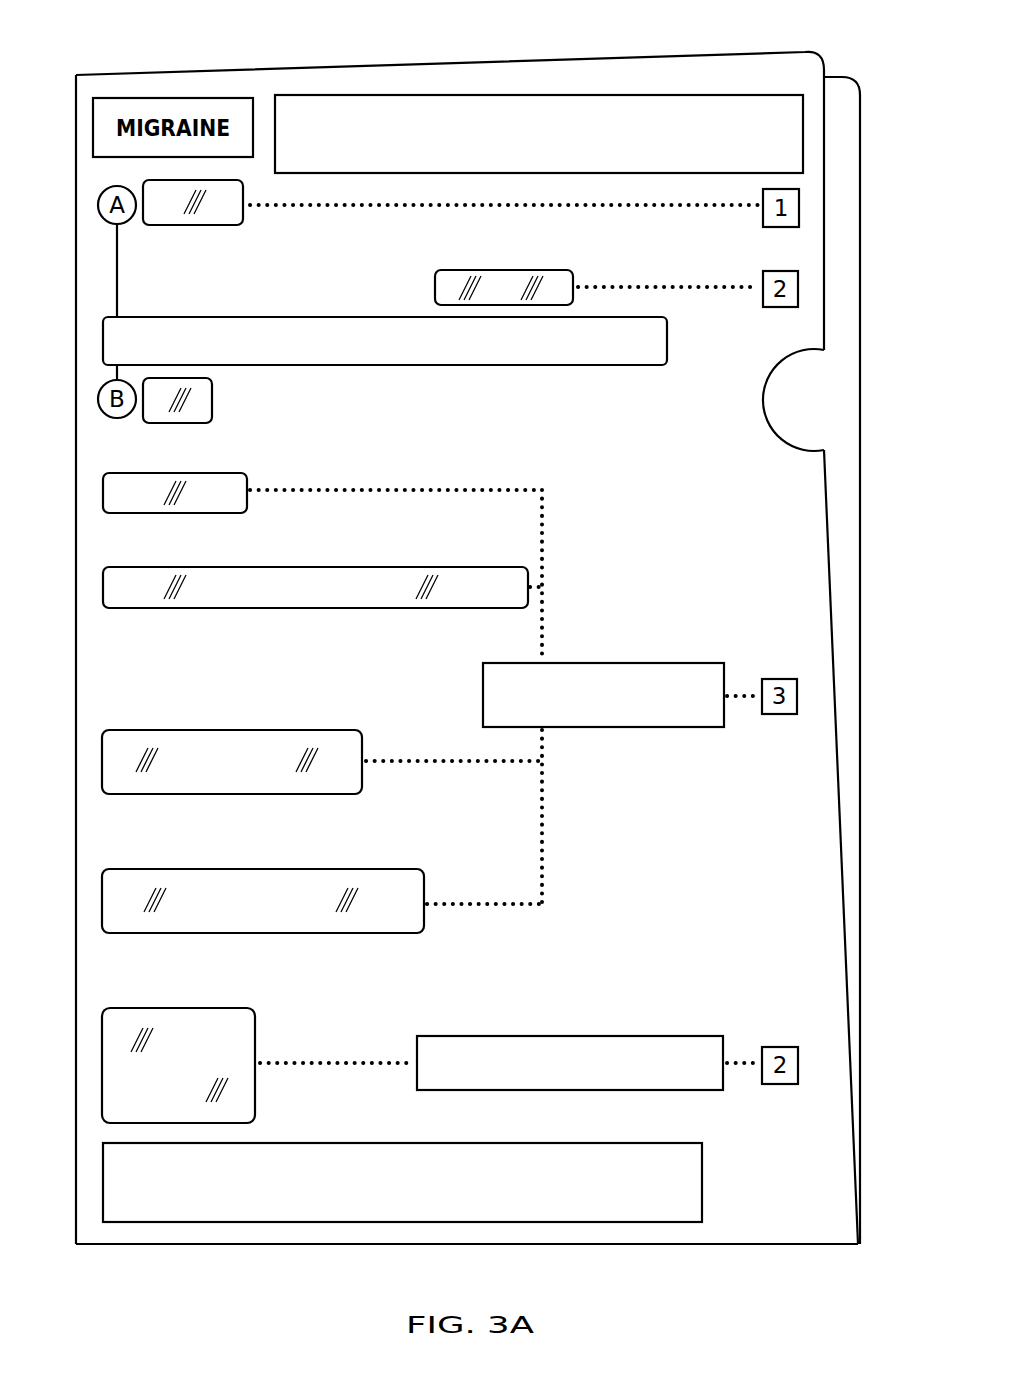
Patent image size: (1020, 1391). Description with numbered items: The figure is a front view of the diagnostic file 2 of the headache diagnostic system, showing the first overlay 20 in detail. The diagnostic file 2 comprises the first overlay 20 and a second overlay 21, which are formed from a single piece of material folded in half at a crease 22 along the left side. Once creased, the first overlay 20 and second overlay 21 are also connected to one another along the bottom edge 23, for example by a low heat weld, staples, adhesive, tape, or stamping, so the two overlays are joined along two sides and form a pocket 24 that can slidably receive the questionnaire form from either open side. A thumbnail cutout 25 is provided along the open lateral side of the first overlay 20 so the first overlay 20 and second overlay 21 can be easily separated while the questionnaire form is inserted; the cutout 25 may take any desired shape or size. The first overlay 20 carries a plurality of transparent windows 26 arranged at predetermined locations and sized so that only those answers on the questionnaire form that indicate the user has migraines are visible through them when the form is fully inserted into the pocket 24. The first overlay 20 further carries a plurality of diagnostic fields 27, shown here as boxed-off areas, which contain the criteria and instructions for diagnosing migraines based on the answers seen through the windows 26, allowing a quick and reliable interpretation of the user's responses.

The diagnostic file 2 is at (468, 647).
The first overlay 20 is at (468, 671).
The second overlay 21 is at (859, 76).
The crease 22 is at (76, 645).
The bottom edge 23 is at (336, 1245).
The pocket 24 is at (838, 500).
The thumbnail cutout 25 is at (777, 398).
The transparent window 26 is at (170, 225).
The diagnostic field 27 is at (460, 95).